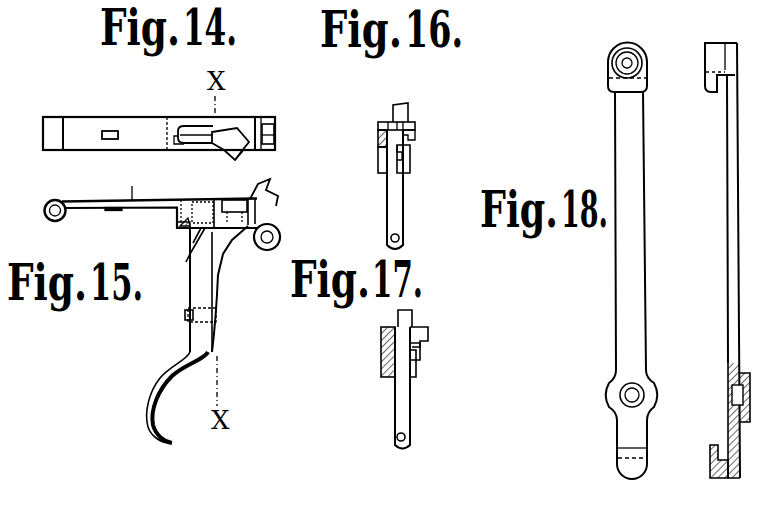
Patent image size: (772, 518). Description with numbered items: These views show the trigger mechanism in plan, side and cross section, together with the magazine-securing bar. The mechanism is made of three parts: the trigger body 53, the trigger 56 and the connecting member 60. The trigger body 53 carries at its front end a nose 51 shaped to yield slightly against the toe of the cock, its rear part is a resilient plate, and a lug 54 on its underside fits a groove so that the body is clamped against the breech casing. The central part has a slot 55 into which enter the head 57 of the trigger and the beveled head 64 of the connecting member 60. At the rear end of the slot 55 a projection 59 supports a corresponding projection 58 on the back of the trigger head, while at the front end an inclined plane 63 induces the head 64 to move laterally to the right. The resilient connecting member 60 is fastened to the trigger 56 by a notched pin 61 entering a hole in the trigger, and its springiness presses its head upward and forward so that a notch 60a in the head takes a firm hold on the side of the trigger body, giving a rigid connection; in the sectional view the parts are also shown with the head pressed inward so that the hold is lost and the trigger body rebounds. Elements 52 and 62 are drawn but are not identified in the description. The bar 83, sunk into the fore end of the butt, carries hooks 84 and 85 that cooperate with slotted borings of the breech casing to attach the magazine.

In FIG. 14, the nose 51 is at (271, 133).
In FIG. 15, the nose 51 is at (278, 188).
In FIG. 16, the nose 51 is at (408, 104).
In FIG. 17, the nose 51 is at (412, 312).
In FIG. 15, the ring eye 52 is at (279, 240).
In FIG. 16, the ring eye 52 is at (404, 165).
In FIG. 17, the ring eye 52 is at (417, 374).
In FIG. 14, the trigger body 53 is at (148, 149).
In FIG. 15, the trigger body 53 is at (151, 207).
In FIG. 14, the lug 54 is at (109, 130).
In FIG. 15, the lug 54 is at (111, 211).
In FIG. 14, the slot 55 is at (202, 133).
In FIG. 15, the trigger 56 is at (190, 341).
In FIG. 15, the head of the trigger 57 is at (203, 236).
In FIG. 15, the projection 58 is at (187, 222).
In FIG. 14, the projection 59 is at (188, 150).
In FIG. 15, the projection 59 is at (174, 223).
In FIG. 15, the connecting member 60 is at (226, 268).
In FIG. 16, the connecting member 60 is at (397, 197).
In FIG. 17, the connecting member 60 is at (412, 415).
In FIG. 15, the notch 60a is at (233, 204).
In FIG. 16, the notch 60a is at (400, 167).
In FIG. 17, the notch 60a is at (410, 352).
In FIG. 15, the notched pin 61 is at (216, 315).
In FIG. 16, the notched pin 61 is at (399, 238).
In FIG. 17, the notched pin 61 is at (396, 437).
In FIG. 16, the cross pin 62 is at (393, 137).
In FIG. 14, the inclined plane 63 is at (245, 132).
In FIG. 17, the inclined plane 63 is at (421, 345).
In FIG. 14, the beveled head 64 is at (247, 154).
In FIG. 17, the beveled head 64 is at (426, 330).
In FIG. 18, the bar 83 is at (735, 232).
In FIG. 18, the hook 84 is at (718, 88).
In FIG. 18, the hook 85 is at (724, 447).